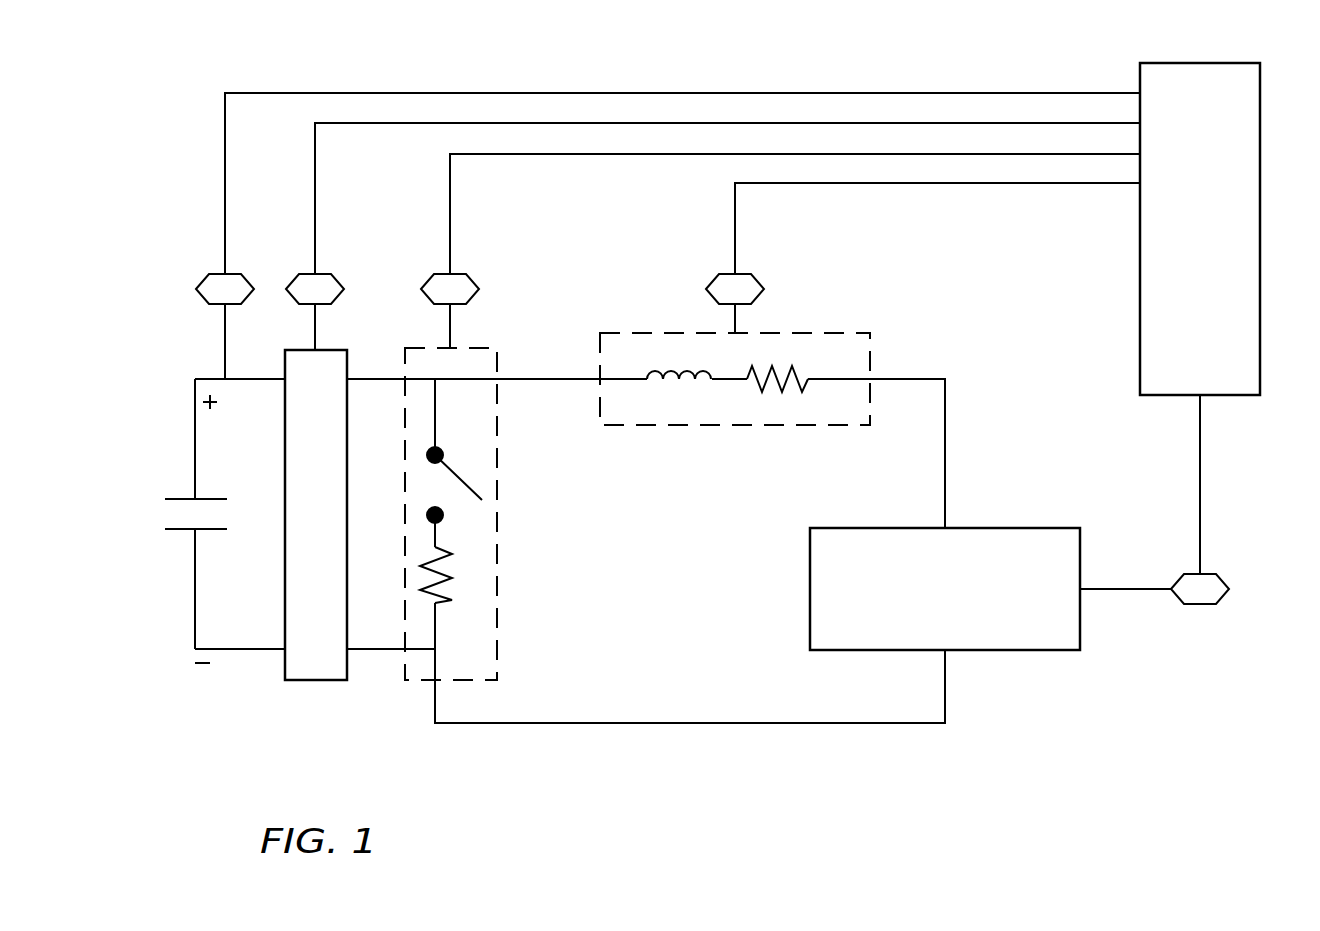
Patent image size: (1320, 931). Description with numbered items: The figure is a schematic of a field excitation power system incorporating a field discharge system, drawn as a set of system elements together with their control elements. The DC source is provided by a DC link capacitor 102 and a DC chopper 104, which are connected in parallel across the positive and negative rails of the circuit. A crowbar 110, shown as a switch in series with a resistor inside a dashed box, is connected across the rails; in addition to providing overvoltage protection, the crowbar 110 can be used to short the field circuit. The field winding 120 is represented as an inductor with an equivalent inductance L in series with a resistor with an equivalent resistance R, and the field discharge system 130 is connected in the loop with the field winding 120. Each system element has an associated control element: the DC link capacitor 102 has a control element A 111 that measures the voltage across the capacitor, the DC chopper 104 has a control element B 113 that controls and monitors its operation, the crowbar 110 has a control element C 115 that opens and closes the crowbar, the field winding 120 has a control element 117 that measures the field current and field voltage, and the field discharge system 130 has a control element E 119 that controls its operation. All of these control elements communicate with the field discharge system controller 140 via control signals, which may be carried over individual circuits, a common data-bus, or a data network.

The DC link capacitor 102 is at (190, 521).
The DC chopper 104 is at (316, 527).
The crowbar 110 is at (474, 514).
The control element A 111 is at (652, 236).
The control element B 113 is at (713, 236).
The control element C 115 is at (780, 251).
The control element D 117 is at (923, 258).
The control element E 119 is at (1154, 516).
The field winding 120 is at (713, 395).
The field discharge system 130 is at (921, 589).
The field discharge system controller 140 is at (1224, 229).